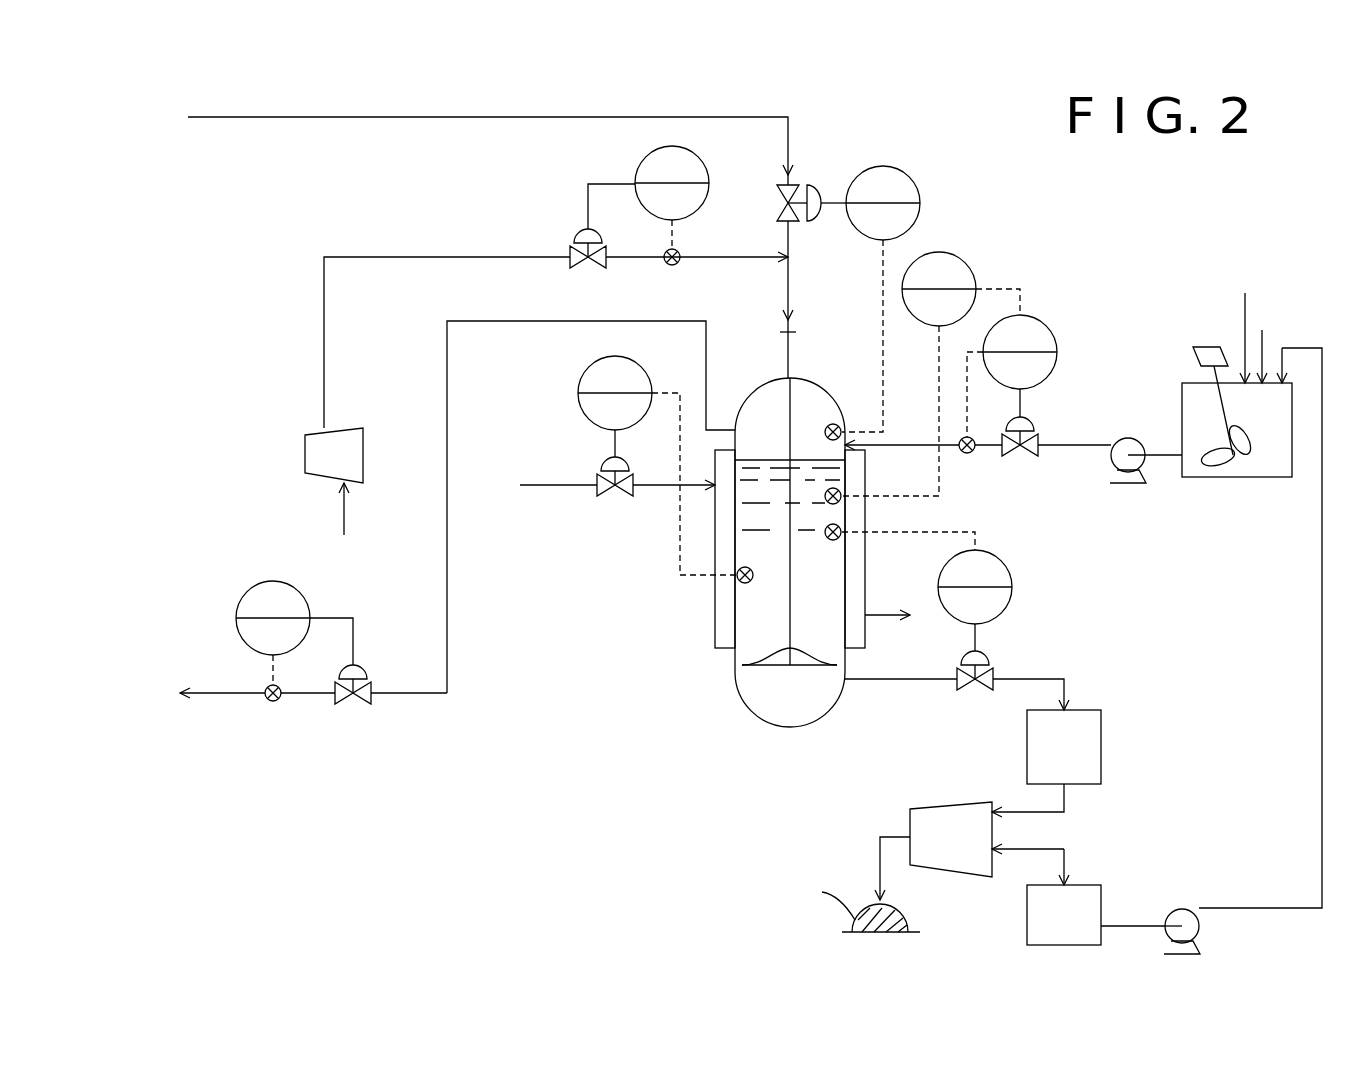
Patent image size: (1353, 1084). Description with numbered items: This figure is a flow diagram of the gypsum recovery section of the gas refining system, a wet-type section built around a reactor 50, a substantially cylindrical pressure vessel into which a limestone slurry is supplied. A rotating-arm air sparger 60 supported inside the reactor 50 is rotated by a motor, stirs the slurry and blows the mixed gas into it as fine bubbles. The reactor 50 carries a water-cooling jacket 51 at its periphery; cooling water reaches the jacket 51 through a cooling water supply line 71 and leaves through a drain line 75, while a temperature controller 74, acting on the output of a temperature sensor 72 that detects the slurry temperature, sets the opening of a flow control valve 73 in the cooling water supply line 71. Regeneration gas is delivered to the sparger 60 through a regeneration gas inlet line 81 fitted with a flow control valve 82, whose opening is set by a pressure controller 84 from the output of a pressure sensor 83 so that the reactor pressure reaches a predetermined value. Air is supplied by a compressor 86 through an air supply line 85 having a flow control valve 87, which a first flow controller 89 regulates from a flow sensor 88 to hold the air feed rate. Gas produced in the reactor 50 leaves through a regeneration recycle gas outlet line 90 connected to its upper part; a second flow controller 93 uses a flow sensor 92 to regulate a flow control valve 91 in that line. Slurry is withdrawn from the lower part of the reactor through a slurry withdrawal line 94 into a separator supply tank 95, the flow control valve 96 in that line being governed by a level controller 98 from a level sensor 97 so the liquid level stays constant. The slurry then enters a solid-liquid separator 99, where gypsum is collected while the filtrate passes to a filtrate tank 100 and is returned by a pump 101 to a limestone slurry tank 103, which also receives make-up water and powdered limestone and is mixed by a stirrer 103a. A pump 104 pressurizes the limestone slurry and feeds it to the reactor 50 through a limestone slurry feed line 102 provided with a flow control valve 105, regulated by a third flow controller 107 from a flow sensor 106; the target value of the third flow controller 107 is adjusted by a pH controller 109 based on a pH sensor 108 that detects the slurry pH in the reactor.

The reactor 50 is at (738, 705).
The water-cooling jacket 51 is at (715, 592).
The rotating-arm air sparger 60 is at (805, 680).
The cooling water supply line 71 is at (552, 487).
The temperature sensor 72 is at (745, 583).
The flow control valve 73 is at (614, 495).
The temperature controller 74 is at (582, 375).
The drain line 75 is at (884, 618).
The regeneration gas inlet line 81 is at (372, 117).
The flow control valve 82 is at (803, 180).
The pressure sensor 83 is at (833, 423).
The pressure controller 84 is at (915, 180).
The air supply line 85 is at (390, 257).
The compressor 86 is at (360, 428).
The flow control valve 87 is at (565, 235).
The flow sensor 88 is at (680, 265).
The first flow controller 89 is at (636, 168).
The regeneration recycle gas outlet line 90 is at (447, 630).
The flow control valve 91 is at (365, 705).
The flow sensor 92 is at (270, 703).
The second flow controller 93 is at (252, 590).
The slurry withdrawal line 94 is at (886, 682).
The separator supply tank 95 is at (1101, 725).
The flow control valve 96 is at (970, 690).
The level sensor 97 is at (842, 538).
The level controller 98 is at (1012, 575).
The solid-liquid separator 99 is at (930, 805).
The filtrate tank 100 is at (1101, 888).
The pump 101 is at (1190, 908).
The limestone slurry feed line 102 is at (890, 447).
The limestone slurry tank 103 is at (1283, 478).
The stirrer 103a is at (1220, 465).
The pump 104 is at (1130, 483).
The flow control valve 105 is at (1022, 455).
The flow sensor 106 is at (968, 455).
The third flow controller 107 is at (1045, 328).
The pH sensor 108 is at (845, 500).
The pH controller 109 is at (965, 262).